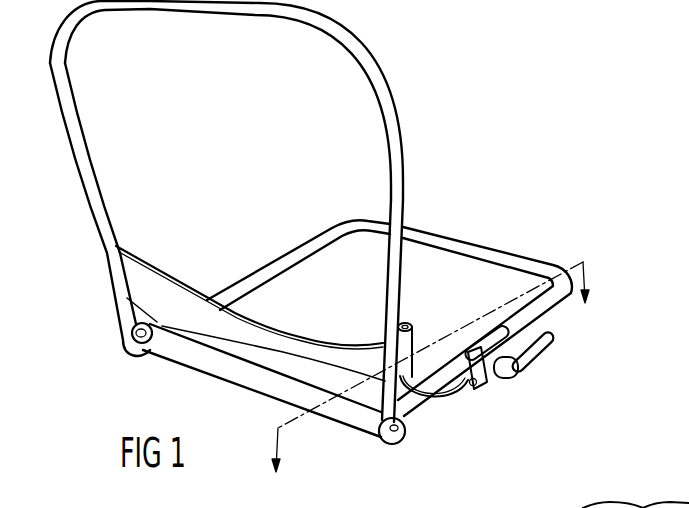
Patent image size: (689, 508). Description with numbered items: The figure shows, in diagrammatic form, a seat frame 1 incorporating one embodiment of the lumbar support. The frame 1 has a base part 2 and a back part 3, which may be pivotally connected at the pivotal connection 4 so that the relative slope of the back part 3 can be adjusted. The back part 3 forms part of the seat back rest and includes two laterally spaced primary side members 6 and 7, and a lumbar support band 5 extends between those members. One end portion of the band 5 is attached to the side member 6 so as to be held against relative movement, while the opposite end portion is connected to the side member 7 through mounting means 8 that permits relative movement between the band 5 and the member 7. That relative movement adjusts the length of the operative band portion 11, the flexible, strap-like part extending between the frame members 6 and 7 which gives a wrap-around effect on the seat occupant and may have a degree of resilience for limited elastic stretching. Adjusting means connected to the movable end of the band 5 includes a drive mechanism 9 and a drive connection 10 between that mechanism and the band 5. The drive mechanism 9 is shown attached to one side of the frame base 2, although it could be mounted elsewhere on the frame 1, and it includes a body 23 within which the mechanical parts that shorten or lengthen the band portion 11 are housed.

The seat frame 1 is at (445, 205).
The base part 2 is at (520, 251).
The back part 3 is at (403, 122).
The pivotal connection 4 is at (397, 433).
The lumbar support band 5 is at (168, 278).
The primary side member 6 is at (78, 153).
The primary side member 7 is at (400, 172).
The mounting means 8 is at (413, 347).
The drive mechanism 9 is at (492, 386).
The drive connection 10 is at (443, 393).
The band portion 11 is at (272, 372).
The body 23 is at (515, 350).